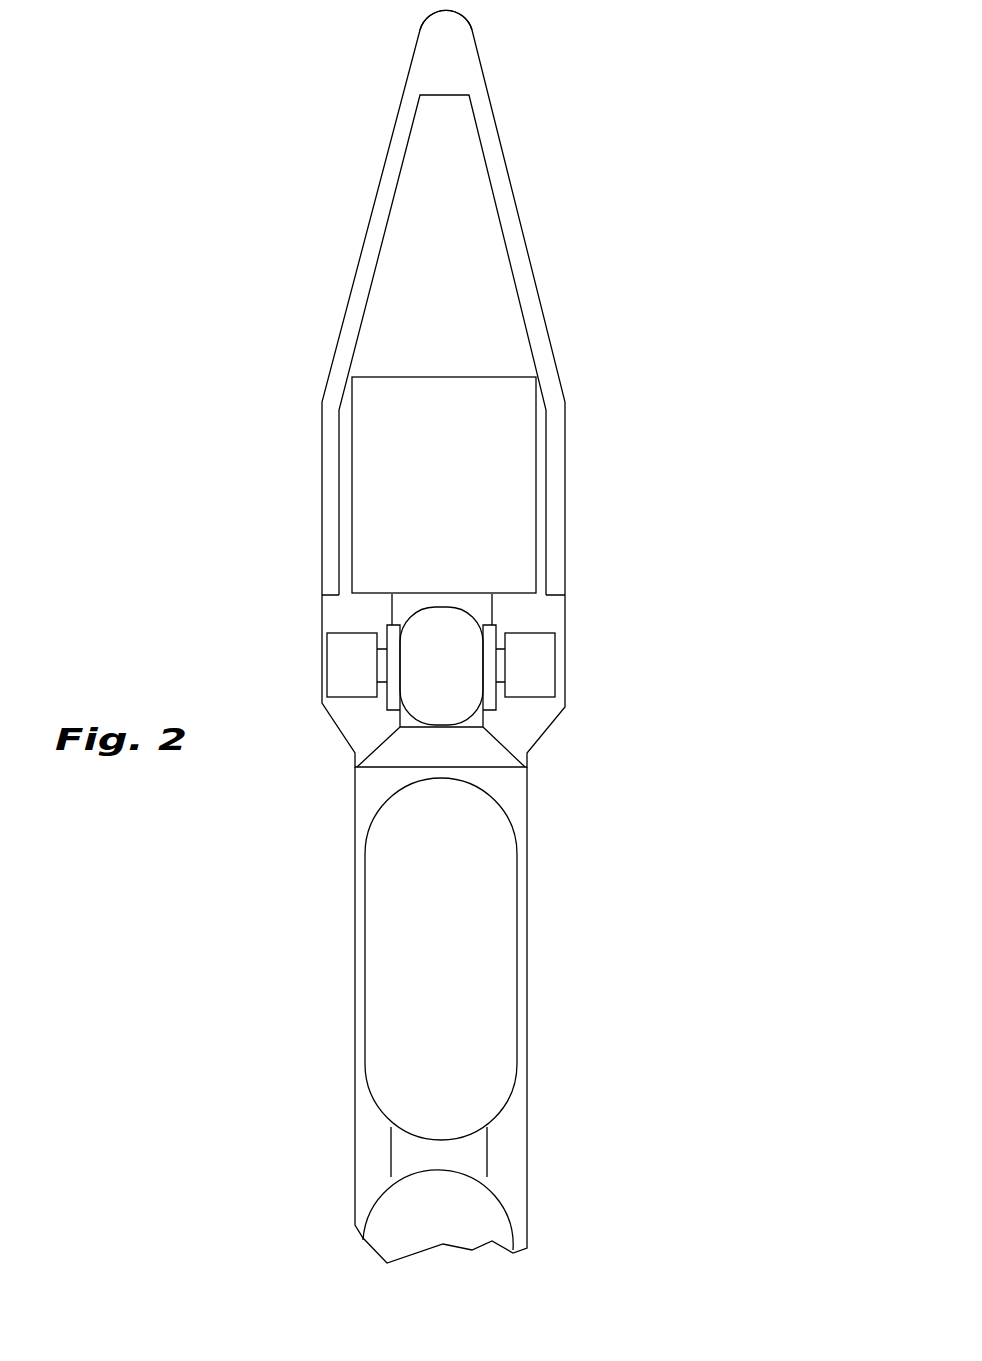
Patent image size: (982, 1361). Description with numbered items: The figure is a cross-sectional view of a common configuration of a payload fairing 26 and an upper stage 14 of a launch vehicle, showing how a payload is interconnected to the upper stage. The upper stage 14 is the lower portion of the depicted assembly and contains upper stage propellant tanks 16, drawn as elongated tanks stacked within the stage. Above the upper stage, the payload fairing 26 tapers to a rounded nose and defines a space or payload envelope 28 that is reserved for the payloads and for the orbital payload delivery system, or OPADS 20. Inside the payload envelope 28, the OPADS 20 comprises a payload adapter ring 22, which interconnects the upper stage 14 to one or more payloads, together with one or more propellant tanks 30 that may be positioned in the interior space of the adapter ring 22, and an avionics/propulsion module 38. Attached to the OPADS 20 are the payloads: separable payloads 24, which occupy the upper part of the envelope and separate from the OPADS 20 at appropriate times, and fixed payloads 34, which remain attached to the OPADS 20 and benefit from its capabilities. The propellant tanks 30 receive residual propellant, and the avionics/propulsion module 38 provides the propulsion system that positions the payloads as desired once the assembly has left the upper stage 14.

The upper stage 14 is at (277, 978).
The upper stage propellant tanks 16 is at (482, 982).
The orbital payload delivery system (OPADS) 20 is at (653, 648).
The payload adapter ring 22 is at (528, 742).
The separable payloads 24 is at (510, 457).
The payload fairing 26 is at (478, 55).
The payload envelope 28 is at (465, 283).
The propellant tanks 30 is at (453, 638).
The fixed payloads 34 is at (345, 675).
The avionics/propulsion module 38 is at (535, 655).